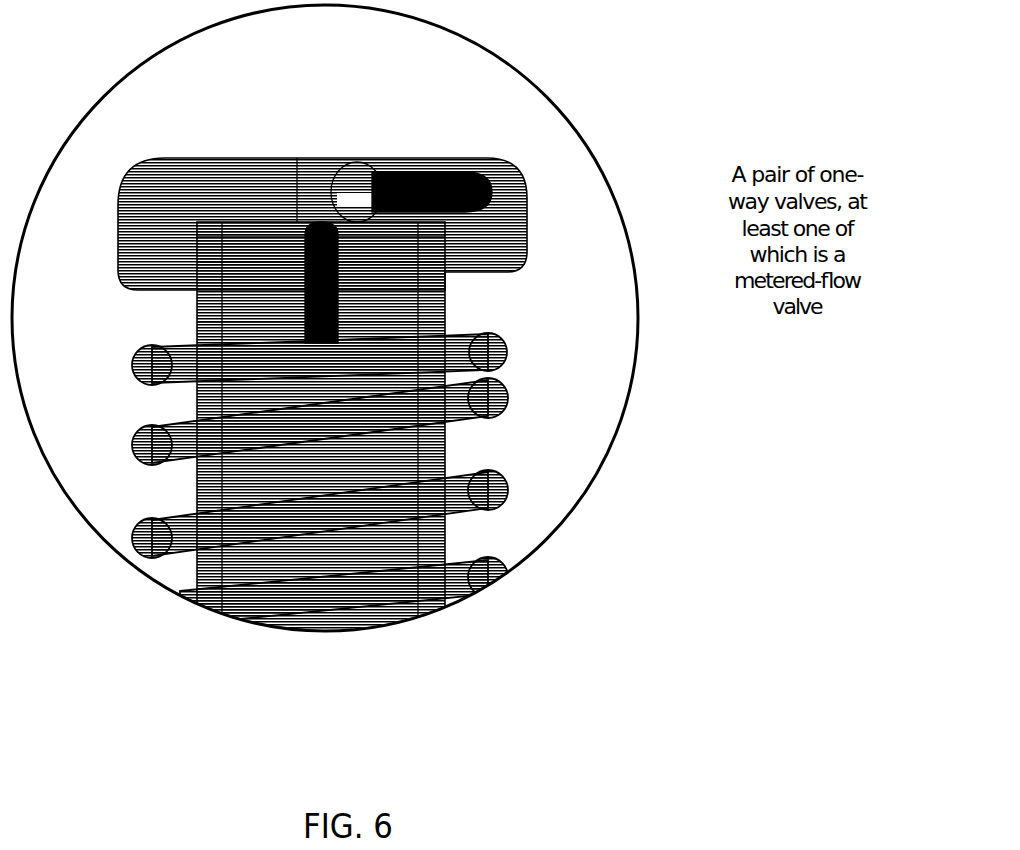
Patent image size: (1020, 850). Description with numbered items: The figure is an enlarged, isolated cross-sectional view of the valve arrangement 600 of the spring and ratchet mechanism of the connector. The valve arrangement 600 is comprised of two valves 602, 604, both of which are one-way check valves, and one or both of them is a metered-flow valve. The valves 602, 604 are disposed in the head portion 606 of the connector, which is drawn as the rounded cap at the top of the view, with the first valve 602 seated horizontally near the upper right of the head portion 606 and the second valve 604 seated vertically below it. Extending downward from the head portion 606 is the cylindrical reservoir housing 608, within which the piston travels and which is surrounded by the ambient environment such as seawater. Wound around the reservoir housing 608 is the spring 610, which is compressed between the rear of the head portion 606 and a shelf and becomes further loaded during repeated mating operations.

The valve arrangement 600 is at (570, 527).
The valve 602 is at (505, 198).
The valve 604 is at (355, 303).
The head portion 606 is at (272, 188).
The cylindrical reservoir housing 608 is at (217, 305).
The spring 610 is at (490, 398).